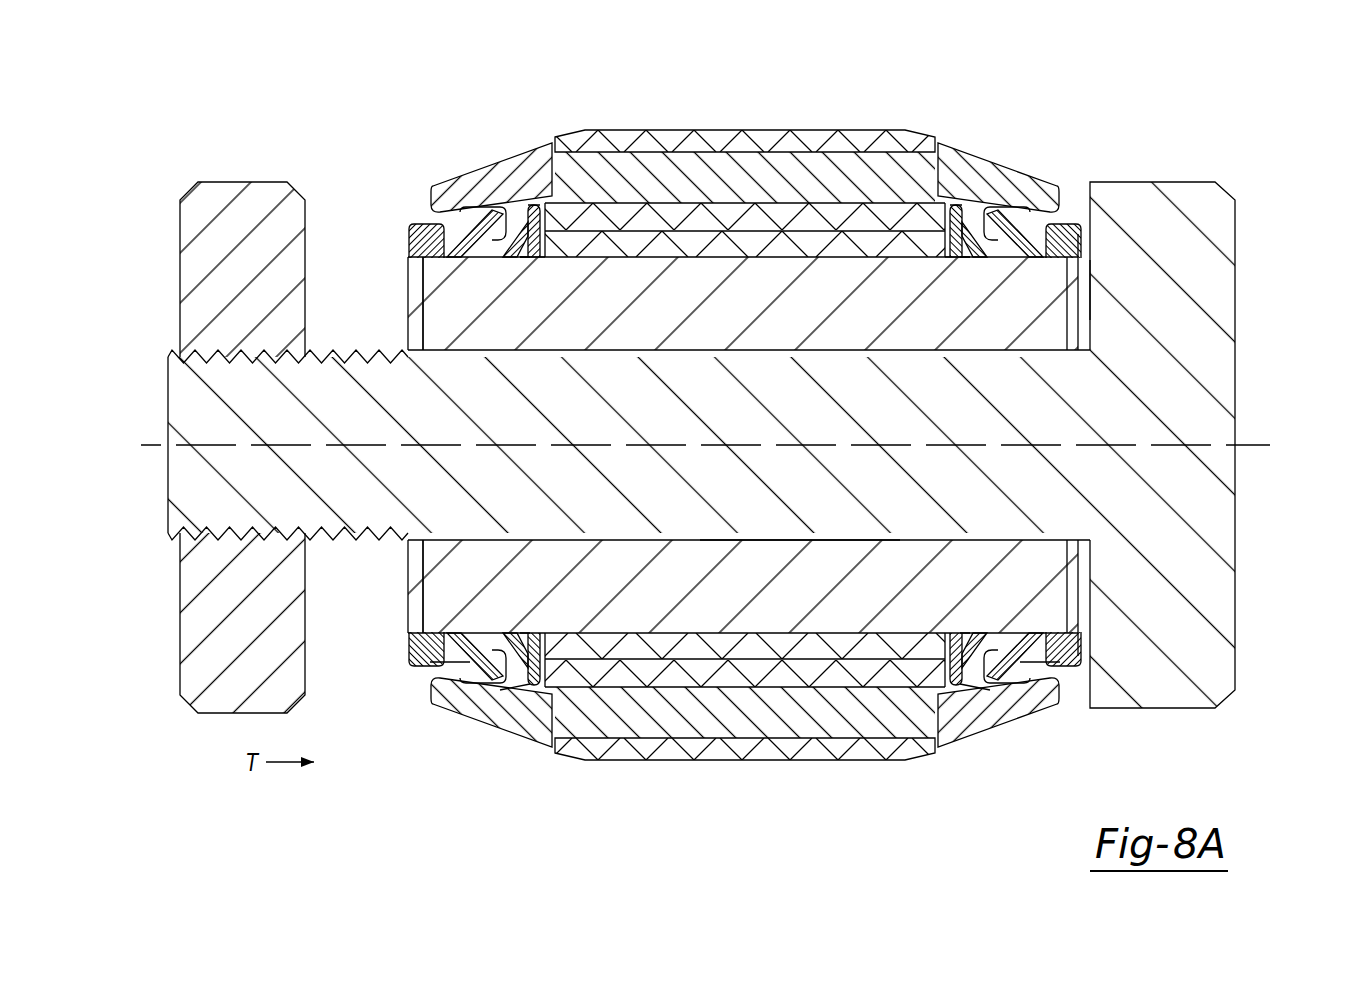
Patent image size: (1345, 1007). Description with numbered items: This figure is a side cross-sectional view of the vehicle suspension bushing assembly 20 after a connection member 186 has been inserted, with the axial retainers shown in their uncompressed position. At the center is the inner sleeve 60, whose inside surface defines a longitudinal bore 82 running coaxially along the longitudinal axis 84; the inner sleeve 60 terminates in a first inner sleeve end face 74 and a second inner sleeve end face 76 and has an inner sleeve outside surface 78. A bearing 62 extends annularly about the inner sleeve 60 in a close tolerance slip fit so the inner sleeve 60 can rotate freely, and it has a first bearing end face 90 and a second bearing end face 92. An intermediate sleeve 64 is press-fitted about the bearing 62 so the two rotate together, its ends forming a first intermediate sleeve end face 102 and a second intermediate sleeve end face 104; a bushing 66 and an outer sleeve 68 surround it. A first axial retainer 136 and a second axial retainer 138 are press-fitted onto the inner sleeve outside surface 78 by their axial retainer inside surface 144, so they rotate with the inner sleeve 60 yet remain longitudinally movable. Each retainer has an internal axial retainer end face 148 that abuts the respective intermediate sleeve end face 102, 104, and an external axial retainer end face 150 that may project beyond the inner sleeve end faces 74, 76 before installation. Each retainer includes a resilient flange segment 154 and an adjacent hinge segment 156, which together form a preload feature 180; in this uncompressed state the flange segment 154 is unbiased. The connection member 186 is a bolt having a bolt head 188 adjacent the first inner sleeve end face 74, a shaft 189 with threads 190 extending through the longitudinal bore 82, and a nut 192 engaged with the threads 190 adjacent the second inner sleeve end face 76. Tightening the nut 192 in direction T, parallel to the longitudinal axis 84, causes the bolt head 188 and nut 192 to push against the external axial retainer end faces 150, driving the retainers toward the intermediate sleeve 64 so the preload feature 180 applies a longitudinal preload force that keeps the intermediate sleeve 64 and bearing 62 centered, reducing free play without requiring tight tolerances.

The vehicle suspension bushing assembly 20 is at (200, 124).
The inner sleeve 60 is at (702, 363).
The bearing 62 is at (690, 240).
The intermediate sleeve 64 is at (748, 213).
The bushing 66 is at (805, 165).
The outer sleeve 68 is at (855, 135).
The first inner sleeve end face 74 is at (1075, 290).
The second inner sleeve end face 76 is at (412, 290).
The inner sleeve outside surface 78 is at (458, 648).
The longitudinal bore 82 is at (828, 548).
The longitudinal axis 84 is at (660, 445).
The first bearing end face 90 is at (955, 250).
The second bearing end face 92 is at (538, 250).
The first intermediate sleeve end face 102 is at (950, 692).
The second intermediate sleeve end face 104 is at (530, 692).
The first axial retainer 136 is at (1006, 460).
The second axial retainer 138 is at (484, 458).
The axial retainer inside surface 144 is at (726, 640).
The internal axial retainer end face 148 is at (745, 384).
The external axial retainer end face 150 is at (743, 254).
The flange segment 154 is at (540, 235).
The hinge segment 156 is at (505, 225).
The preload feature 180 is at (527, 262).
The connection member 186 is at (744, 420).
The bolt head 188 is at (1187, 445).
The shaft 189 is at (802, 410).
The threads 190 is at (350, 353).
The nut 192 is at (200, 240).